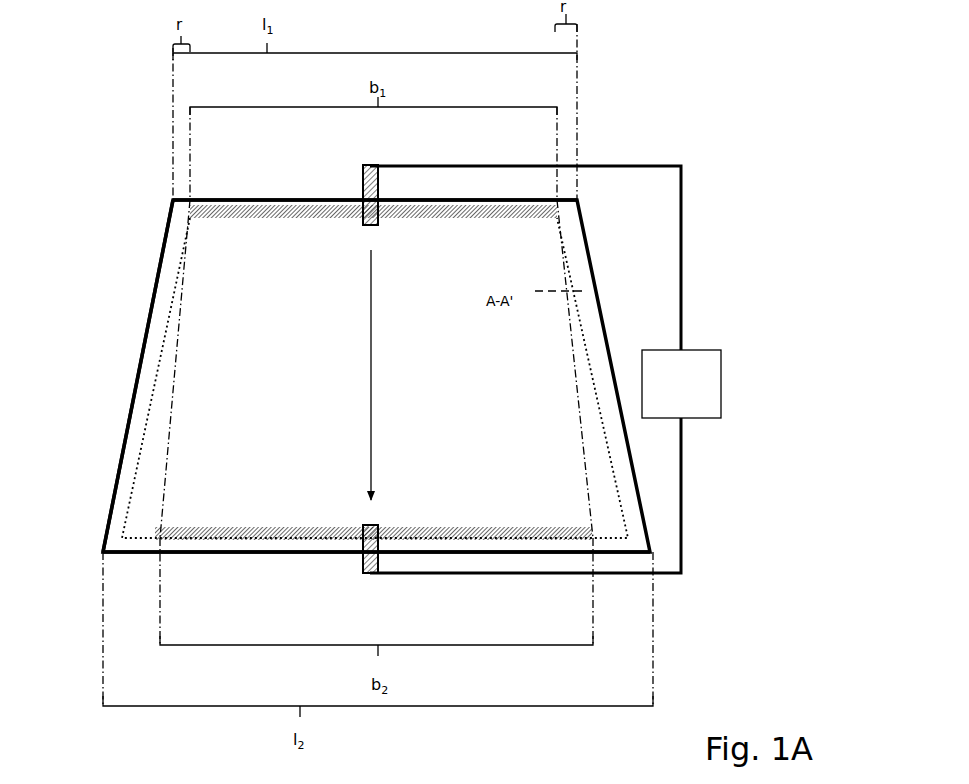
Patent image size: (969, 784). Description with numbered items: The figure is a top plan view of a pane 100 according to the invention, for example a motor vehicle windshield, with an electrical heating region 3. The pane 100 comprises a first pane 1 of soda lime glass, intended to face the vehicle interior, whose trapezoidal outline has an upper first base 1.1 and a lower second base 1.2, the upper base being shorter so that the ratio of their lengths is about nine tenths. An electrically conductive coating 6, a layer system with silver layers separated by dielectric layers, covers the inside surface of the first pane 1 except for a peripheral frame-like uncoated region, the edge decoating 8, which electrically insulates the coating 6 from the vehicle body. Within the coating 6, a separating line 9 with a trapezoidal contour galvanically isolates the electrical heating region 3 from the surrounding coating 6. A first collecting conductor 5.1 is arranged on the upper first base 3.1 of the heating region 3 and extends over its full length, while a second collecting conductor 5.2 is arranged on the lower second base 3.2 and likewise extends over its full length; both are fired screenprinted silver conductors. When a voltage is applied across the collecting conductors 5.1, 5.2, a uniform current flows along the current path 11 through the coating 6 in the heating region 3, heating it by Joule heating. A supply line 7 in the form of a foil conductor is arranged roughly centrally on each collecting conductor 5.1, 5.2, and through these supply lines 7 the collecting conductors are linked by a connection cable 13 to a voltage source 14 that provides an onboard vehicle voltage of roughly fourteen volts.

The pane 100 is at (140, 72).
The first pane 1 is at (142, 325).
The first base of the first pane 1.1 is at (322, 197).
The second base of the first pane 1.2 is at (300, 555).
The electrical heating region 3 is at (185, 450).
The first base of the electrical heating region 3.1 is at (258, 204).
The second base of the electrical heating region 3.2 is at (232, 541).
The first collecting conductor 5.1 is at (240, 216).
The second collecting conductor 5.2 is at (200, 541).
The electrically conductive coating 6 is at (120, 519).
The supply line 7 is at (380, 187).
The edge decoating 8 is at (148, 375).
The separating line 9 is at (190, 396).
The current path 11 is at (371, 357).
The connection cable 13 is at (656, 165).
The voltage source 14 is at (721, 355).